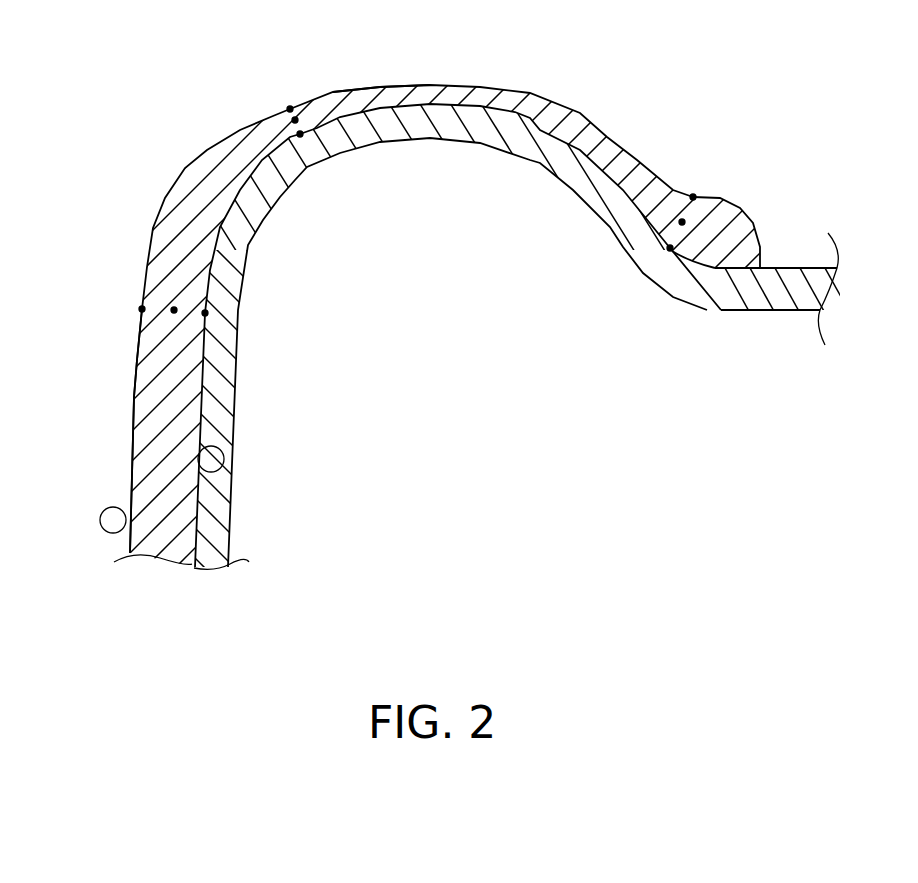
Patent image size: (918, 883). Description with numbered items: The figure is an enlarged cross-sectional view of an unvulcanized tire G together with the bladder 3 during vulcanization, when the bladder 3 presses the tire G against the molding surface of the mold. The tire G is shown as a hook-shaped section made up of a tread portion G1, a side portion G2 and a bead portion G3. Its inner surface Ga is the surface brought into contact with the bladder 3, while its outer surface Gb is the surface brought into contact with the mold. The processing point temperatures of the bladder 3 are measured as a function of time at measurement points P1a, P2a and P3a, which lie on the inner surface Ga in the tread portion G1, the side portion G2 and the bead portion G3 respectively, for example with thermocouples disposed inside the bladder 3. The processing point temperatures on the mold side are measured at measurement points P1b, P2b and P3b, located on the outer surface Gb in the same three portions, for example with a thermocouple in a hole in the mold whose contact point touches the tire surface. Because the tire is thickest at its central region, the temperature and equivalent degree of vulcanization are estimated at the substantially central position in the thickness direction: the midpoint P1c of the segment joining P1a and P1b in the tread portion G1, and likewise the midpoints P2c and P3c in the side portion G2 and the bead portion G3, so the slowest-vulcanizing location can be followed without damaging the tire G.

The unvulcanized tire G is at (157, 189).
The tread portion G1 is at (135, 376).
The side portion G2 is at (345, 100).
The bead portion G3 is at (715, 205).
The inner surface Ga is at (198, 461).
The outer surface Gb is at (126, 528).
The measurement point P1a is at (205, 313).
The measurement point P1b is at (205, 313).
The midpoint P1c is at (142, 309).
The measurement point P2a is at (300, 134).
The measurement point P2b is at (295, 120).
The midpoint P2c is at (300, 134).
The measurement point P3a is at (670, 248).
The measurement point P3b is at (682, 222).
The midpoint P3c is at (670, 248).
The bladder 3 is at (762, 290).